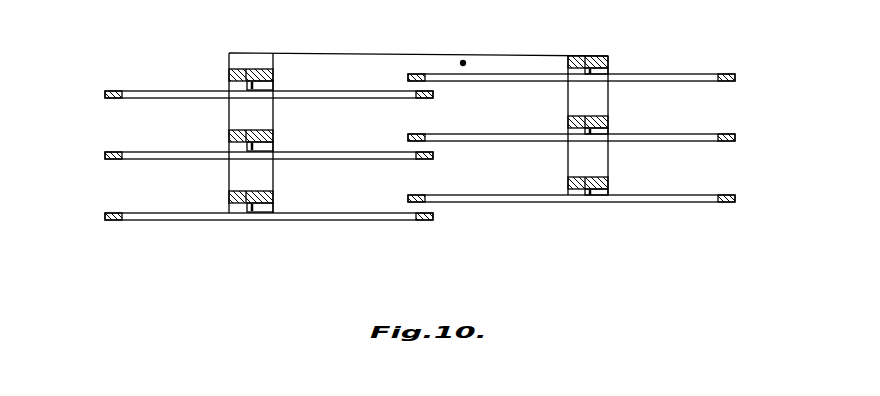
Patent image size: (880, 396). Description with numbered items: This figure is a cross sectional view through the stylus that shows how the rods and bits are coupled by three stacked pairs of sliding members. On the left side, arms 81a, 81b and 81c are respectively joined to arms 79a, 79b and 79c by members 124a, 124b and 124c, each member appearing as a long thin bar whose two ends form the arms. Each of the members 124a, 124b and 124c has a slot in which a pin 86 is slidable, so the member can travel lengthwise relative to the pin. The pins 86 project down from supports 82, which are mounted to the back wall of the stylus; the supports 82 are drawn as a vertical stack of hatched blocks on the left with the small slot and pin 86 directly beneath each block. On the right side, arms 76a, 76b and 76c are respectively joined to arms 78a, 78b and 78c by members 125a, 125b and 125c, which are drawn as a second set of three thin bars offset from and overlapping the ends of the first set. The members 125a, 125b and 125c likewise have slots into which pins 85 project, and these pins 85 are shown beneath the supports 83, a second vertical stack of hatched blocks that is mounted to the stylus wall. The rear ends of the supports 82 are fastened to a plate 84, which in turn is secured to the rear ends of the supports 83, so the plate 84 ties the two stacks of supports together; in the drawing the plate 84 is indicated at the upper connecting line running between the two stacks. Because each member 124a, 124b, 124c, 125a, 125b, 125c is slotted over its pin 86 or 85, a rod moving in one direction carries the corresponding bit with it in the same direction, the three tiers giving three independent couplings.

The arm 76a is at (736, 81).
The arm 76b is at (734, 141).
The arm 76c is at (734, 198).
The arm 78a is at (410, 73).
The arm 78b is at (410, 133).
The arm 78c is at (410, 194).
The arm 79a is at (426, 99).
The arm 79b is at (426, 160).
The arm 79c is at (426, 221).
The arm 81a is at (107, 90).
The arm 81b is at (107, 151).
The arm 81c is at (108, 212).
The support 82 is at (243, 78).
The support 83 is at (586, 56).
The plate 84 is at (464, 60).
The pin 85 is at (609, 71).
The pin 86 is at (274, 84).
The member 124a is at (183, 90).
The member 124b is at (188, 151).
The member 124c is at (196, 212).
The member 125a is at (541, 73).
The member 125b is at (541, 133).
The member 125c is at (541, 194).